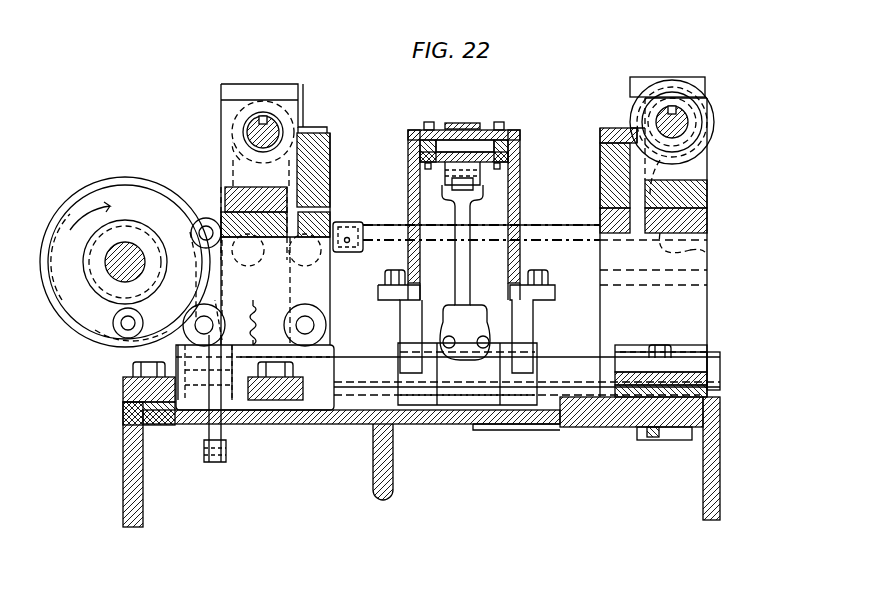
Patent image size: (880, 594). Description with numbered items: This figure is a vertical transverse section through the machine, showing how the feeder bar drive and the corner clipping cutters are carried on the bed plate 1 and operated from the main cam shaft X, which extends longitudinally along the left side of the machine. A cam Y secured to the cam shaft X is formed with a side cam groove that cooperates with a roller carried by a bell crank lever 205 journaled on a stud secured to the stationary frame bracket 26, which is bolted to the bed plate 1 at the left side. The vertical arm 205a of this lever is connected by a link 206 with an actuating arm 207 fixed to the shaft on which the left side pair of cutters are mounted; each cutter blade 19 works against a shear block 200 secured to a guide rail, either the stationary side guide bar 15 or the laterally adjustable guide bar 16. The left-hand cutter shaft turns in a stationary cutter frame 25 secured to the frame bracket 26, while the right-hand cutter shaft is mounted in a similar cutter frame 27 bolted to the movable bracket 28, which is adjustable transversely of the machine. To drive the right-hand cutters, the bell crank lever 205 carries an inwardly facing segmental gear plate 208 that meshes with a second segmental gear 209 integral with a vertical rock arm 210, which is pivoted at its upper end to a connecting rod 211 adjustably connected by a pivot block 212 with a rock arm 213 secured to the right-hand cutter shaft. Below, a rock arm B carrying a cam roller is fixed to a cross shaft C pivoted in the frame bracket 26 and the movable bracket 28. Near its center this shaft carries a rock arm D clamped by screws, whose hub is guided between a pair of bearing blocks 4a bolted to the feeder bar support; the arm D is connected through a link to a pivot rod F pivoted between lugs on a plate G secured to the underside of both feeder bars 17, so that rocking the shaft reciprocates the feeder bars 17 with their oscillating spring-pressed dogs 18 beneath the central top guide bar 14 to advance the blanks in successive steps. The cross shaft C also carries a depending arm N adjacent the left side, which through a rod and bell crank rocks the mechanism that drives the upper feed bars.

The bed plate 1 is at (350, 424).
The bearing blocks 4a is at (404, 332).
The central top guide bar 14 is at (470, 123).
The stationary side guide bar 15 is at (312, 128).
The guide bar 16 is at (600, 138).
The feeder bars 17 is at (424, 140).
The oscillating spring-pressed dogs 18 is at (427, 122).
The cutter blade 19 is at (712, 116).
The stationary cutter frame 25 is at (322, 180).
The frame bracket 26 is at (123, 388).
The cutter frame 27 is at (606, 160).
The movable bracket 28 is at (705, 322).
The shear block 200 is at (624, 128).
The bell crank lever 205 is at (152, 316).
The vertical arm 205a is at (192, 232).
The link 206 is at (232, 250).
The actuating arm 207 is at (250, 176).
The segmental gear plate 208 is at (228, 318).
The segmental gear 209 is at (280, 318).
The vertical rock arm 210 is at (316, 290).
The connecting rod 211 is at (383, 235).
The pivot block 212 is at (695, 252).
The rock arm 213 is at (690, 168).
The rock arm B is at (255, 357).
The cross shaft C is at (380, 368).
The rock arm D is at (458, 260).
The pivot rod F is at (488, 168).
The plate G is at (437, 168).
The depending arm N is at (212, 430).
The main cam shaft X is at (118, 272).
The cam Y is at (97, 345).